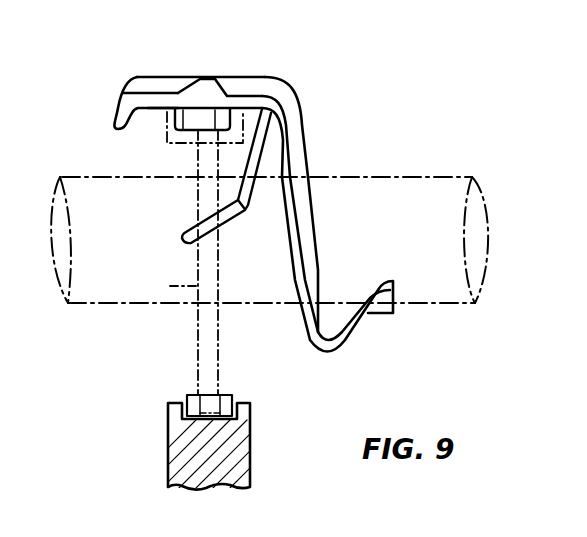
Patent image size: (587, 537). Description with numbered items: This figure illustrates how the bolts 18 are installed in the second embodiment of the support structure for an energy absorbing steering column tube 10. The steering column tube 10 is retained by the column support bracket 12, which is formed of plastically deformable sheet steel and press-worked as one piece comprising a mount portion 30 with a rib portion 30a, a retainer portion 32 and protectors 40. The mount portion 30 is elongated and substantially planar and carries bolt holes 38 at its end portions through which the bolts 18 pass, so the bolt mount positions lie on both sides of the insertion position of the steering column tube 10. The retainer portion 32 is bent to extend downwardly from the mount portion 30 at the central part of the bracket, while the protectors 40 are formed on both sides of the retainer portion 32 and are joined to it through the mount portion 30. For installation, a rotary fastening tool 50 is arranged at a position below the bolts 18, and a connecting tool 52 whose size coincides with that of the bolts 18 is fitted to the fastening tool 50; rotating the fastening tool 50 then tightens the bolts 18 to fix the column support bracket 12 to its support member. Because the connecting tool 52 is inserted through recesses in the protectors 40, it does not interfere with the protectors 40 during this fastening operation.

The steering column tube 10 is at (378, 176).
The column support bracket 12 is at (136, 74).
The bolt 18 is at (197, 123).
The mount portion 30 is at (239, 97).
The rib portion 30a is at (262, 81).
The retainer portion 32 is at (297, 247).
The bolt hole 38 is at (176, 98).
The protector 40 is at (259, 162).
The rotary fastening tool 50 is at (242, 432).
The connecting tool 52 is at (171, 288).